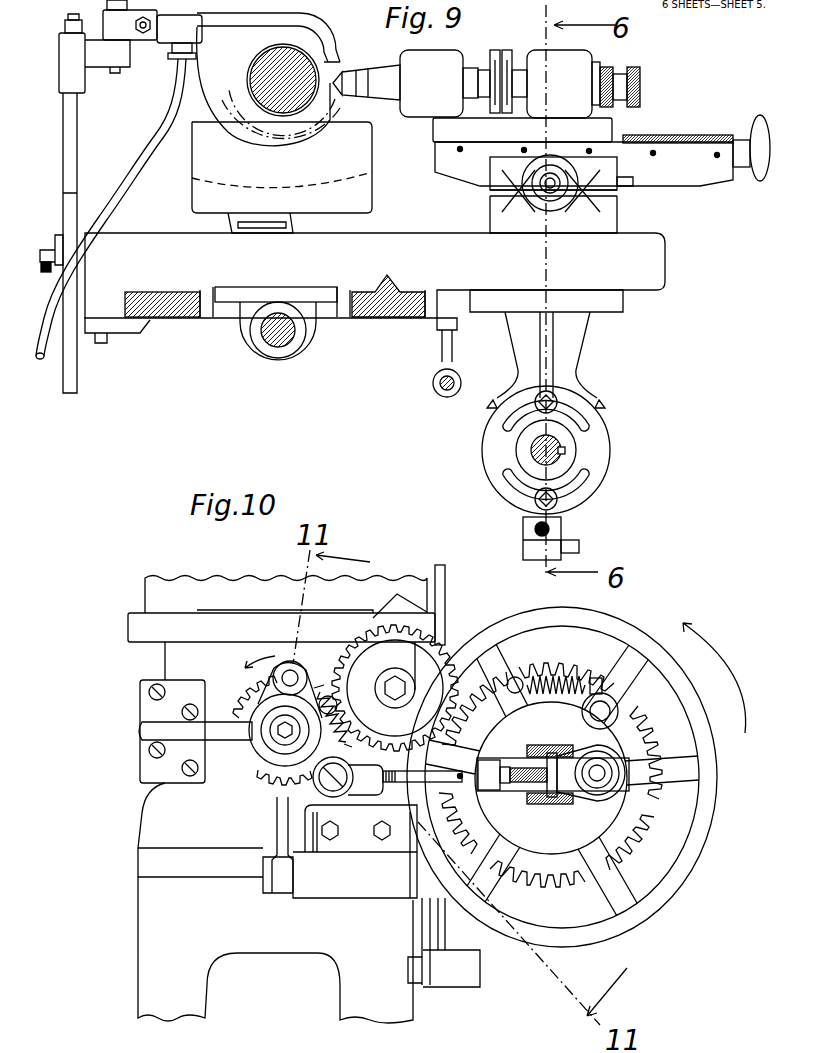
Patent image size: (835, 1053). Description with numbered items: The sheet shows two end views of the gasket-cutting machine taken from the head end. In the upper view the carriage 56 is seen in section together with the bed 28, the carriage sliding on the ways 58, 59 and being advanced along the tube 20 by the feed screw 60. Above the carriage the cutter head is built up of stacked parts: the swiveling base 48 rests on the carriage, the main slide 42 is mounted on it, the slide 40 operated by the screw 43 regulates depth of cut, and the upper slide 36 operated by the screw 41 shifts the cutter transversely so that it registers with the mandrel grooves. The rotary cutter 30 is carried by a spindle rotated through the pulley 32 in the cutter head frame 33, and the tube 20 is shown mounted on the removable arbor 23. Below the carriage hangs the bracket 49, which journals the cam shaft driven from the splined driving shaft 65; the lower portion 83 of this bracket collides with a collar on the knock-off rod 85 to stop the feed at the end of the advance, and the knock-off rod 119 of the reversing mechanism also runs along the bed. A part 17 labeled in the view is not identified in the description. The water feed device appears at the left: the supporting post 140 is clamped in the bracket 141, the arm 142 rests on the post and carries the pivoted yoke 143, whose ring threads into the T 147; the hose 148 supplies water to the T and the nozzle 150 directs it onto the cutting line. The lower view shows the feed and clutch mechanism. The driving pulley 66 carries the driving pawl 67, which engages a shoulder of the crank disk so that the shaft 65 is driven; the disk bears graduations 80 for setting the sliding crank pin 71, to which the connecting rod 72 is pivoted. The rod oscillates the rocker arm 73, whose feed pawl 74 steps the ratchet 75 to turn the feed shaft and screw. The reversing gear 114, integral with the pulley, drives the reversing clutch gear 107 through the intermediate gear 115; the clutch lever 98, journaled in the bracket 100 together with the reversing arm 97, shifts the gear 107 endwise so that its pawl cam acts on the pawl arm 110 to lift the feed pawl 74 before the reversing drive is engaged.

In FIG. 9, the swivel head 17 is at (592, 447).
In FIG. 9, the tube 20 is at (290, 117).
In FIG. 9, the arbor 23 is at (262, 115).
In FIG. 10, the bed 28 is at (145, 822).
In FIG. 9, the rotary cutter 30 is at (336, 74).
In FIG. 9, the pulley 32 is at (490, 47).
In FIG. 9, the cutter head frame 33 is at (563, 60).
In FIG. 9, the upper slide 36 is at (600, 132).
In FIG. 9, the slide 40 is at (584, 164).
In FIG. 9, the screw 41 is at (673, 138).
In FIG. 9, the main slide 42 is at (612, 197).
In FIG. 9, the screw 43 is at (527, 182).
In FIG. 9, the base 48 is at (500, 213).
In FIG. 9, the bracket 49 is at (568, 340).
In FIG. 9, the carriage 56 is at (375, 288).
In FIG. 9, the way 58 is at (177, 318).
In FIG. 9, the way 59 is at (387, 323).
In FIG. 10, the way 59 is at (410, 605).
In FIG. 9, the feed screw 60 is at (283, 347).
In FIG. 9, the splined driving shaft 65 is at (555, 442).
In FIG. 10, the driving pulley 66 is at (708, 779).
In FIG. 10, the driving pawl 67 is at (607, 700).
In FIG. 10, the crank pin 71 is at (598, 781).
In FIG. 10, the connecting rod 72 is at (425, 772).
In FIG. 10, the rocker arm 73 is at (297, 773).
In FIG. 10, the feed pawl 74 is at (290, 720).
In FIG. 10, the ratchet 75 is at (270, 745).
In FIG. 10, the graduations 80 is at (562, 742).
In FIG. 9, the lower portion of bracket 83 is at (561, 528).
In FIG. 9, the knock-off rod 85 is at (537, 527).
In FIG. 10, the reversing arm 97 is at (430, 933).
In FIG. 10, the clutch lever 98 is at (280, 815).
In FIG. 10, the bracket 100 is at (340, 851).
In FIG. 10, the reversing clutch gear 107 is at (281, 672).
In FIG. 10, the pawl arm 110 is at (330, 690).
In FIG. 10, the reversing gear 114 is at (660, 735).
In FIG. 10, the intermediate gear 115 is at (368, 628).
In FIG. 9, the knock-off rod 119 is at (442, 388).
In FIG. 9, the supporting post 140 is at (72, 161).
In FIG. 9, the bracket 141 is at (62, 243).
In FIG. 9, the arm 142 is at (63, 70).
In FIG. 9, the yoke 143 is at (150, 35).
In FIG. 9, the T 147 is at (177, 30).
In FIG. 9, the hose 148 is at (133, 183).
In FIG. 9, the nozzle 150 is at (320, 36).